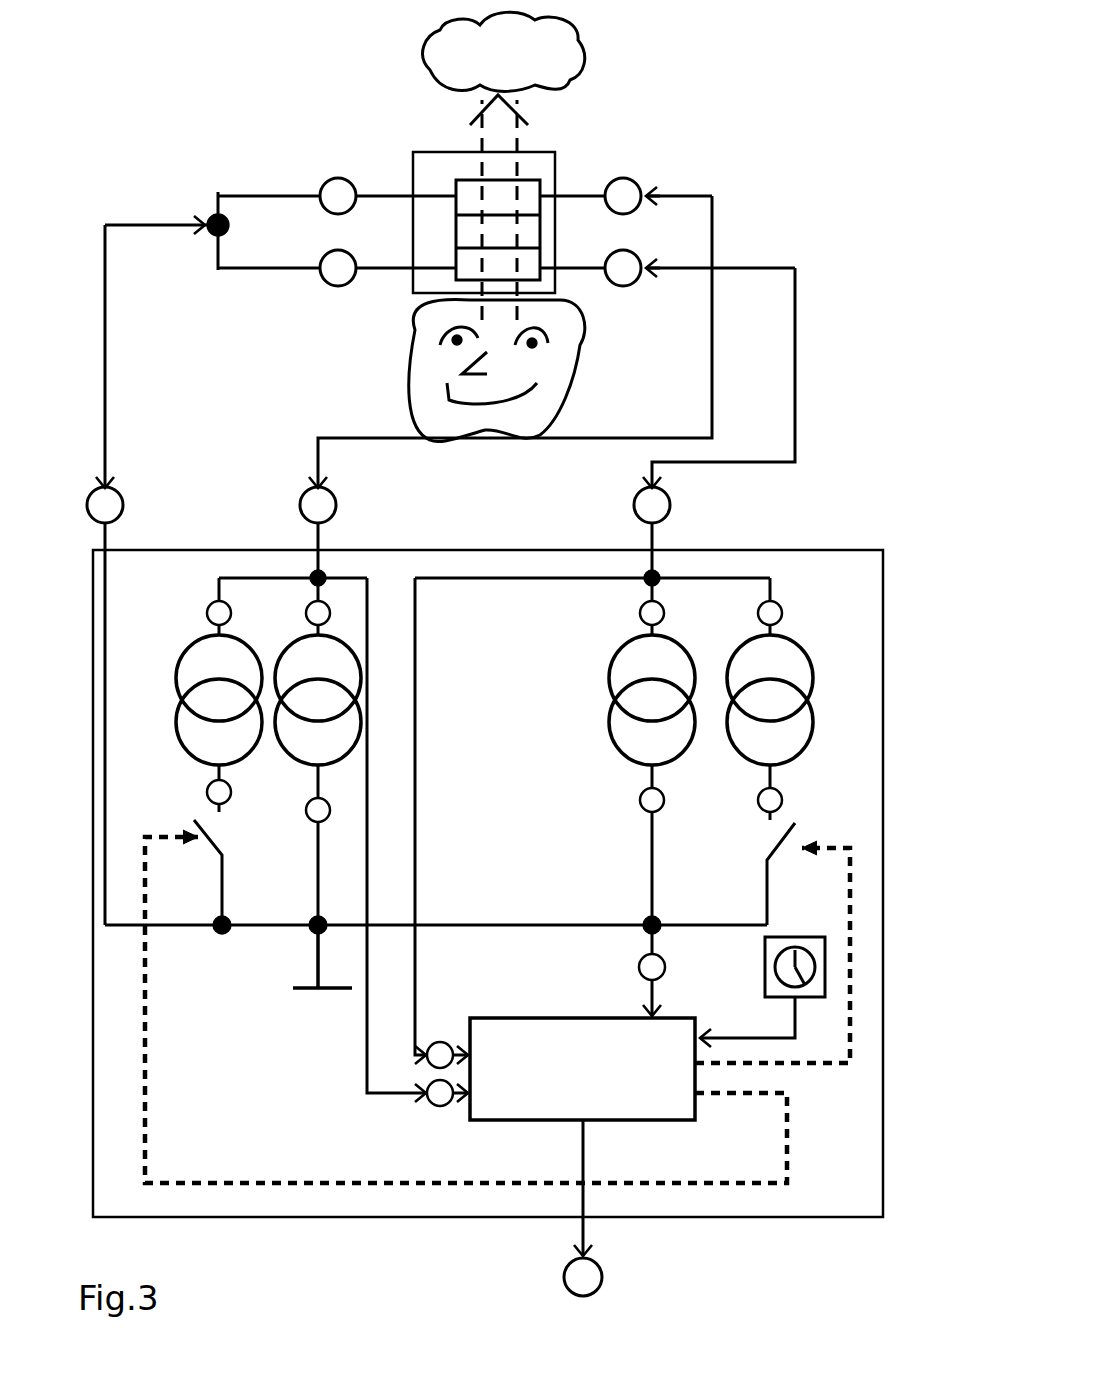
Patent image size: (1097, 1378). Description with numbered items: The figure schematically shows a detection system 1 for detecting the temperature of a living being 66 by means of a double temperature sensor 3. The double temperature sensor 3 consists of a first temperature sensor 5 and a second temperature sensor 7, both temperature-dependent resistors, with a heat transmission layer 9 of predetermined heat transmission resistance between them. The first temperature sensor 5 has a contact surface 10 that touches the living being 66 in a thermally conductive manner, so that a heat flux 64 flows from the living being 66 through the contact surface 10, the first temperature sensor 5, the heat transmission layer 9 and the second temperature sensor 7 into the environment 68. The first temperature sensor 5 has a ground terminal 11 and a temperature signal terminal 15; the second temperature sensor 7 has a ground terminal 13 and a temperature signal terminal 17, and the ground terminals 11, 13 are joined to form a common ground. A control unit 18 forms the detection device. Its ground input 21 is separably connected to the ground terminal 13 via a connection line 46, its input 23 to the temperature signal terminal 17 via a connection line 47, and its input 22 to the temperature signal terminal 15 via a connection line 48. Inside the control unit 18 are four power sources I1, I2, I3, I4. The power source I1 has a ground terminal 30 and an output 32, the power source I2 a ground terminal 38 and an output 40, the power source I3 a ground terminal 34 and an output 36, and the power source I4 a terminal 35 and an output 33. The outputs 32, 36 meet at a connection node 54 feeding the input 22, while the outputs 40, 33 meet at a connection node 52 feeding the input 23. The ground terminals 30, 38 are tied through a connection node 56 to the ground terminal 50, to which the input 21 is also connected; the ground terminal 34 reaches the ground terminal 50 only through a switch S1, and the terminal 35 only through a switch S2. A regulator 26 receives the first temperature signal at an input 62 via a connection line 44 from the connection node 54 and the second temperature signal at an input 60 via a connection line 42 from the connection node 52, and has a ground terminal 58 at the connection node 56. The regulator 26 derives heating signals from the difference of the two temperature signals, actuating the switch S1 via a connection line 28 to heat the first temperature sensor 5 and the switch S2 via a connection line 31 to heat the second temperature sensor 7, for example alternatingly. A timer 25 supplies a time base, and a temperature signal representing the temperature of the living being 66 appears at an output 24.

The detection system 1 is at (822, 146).
The double temperature sensor 3 is at (555, 182).
The first temperature sensor 5 is at (420, 302).
The second temperature sensor 7 is at (458, 182).
The heat transmission layer 9 is at (456, 228).
The contact surface 10 is at (552, 296).
The ground terminal 11 is at (326, 285).
The ground terminal 13 is at (322, 182).
The temperature signal terminal 15 is at (638, 252).
The temperature signal terminal 17 is at (643, 187).
The control unit 18 is at (823, 550).
The ground input 21 is at (120, 487).
The input for a first temperature signal 22 is at (672, 508).
The input for a second temperature signal 23 is at (336, 496).
The output for a temperature signal 24 is at (603, 1277).
The timer 25 is at (747, 1017).
The regulator 26 is at (500, 1120).
The connection line 28 is at (850, 895).
The ground terminal 30 is at (638, 805).
The connection line 31 is at (788, 1150).
The output 32 is at (640, 620).
The output 33 is at (208, 608).
The ground terminal 34 is at (782, 802).
The terminal 35 is at (206, 785).
The output 36 is at (782, 616).
The ground terminal 38 is at (331, 820).
The output 40 is at (331, 616).
The connection line 42 is at (368, 790).
The connection line 44 is at (416, 790).
The connection line 46 is at (170, 230).
The connection line 47 is at (777, 300).
The connection line 48 is at (796, 368).
The ground terminal 50 is at (313, 962).
The connection node 52 is at (328, 582).
The connection node 54 is at (660, 578).
The connection node 56 is at (650, 918).
The ground terminal 58 is at (437, 1042).
The input for a second temperature signal 60 is at (435, 1108).
The input for a first temperature signal 62 is at (638, 970).
The heat flux 64 is at (520, 137).
The living being 66 is at (405, 385).
The environment 68 is at (512, 78).
The power source I1 is at (634, 706).
The power source I2 is at (342, 711).
The power source I3 is at (797, 706).
The power source I4 is at (197, 702).
The switch S1 is at (823, 859).
The switch S2 is at (186, 860).